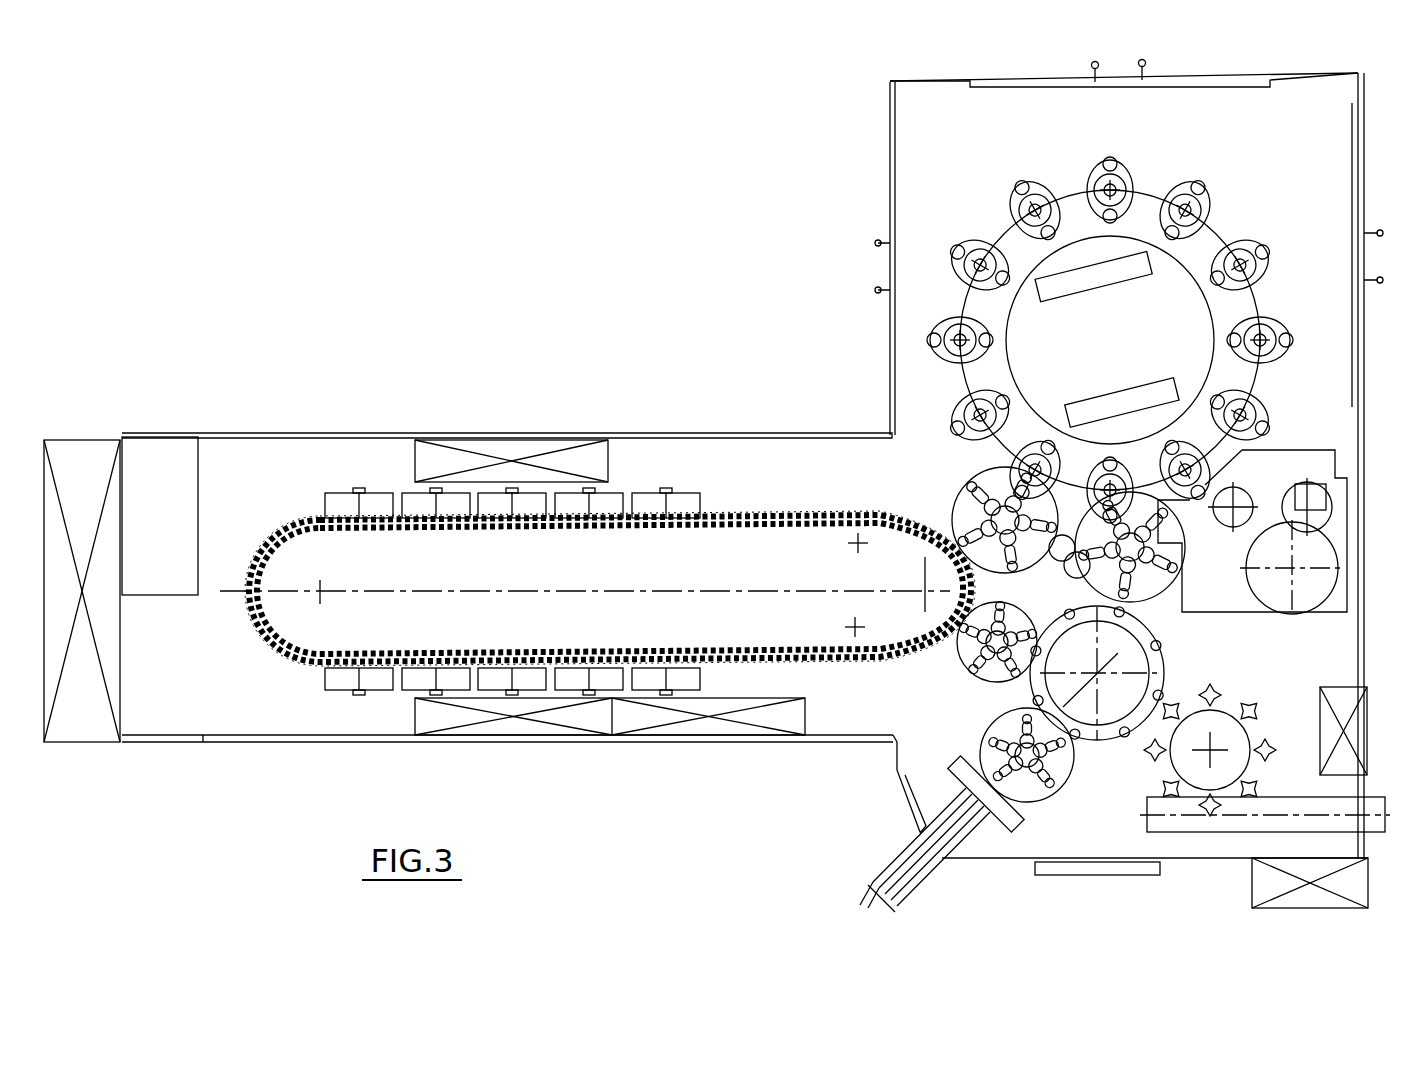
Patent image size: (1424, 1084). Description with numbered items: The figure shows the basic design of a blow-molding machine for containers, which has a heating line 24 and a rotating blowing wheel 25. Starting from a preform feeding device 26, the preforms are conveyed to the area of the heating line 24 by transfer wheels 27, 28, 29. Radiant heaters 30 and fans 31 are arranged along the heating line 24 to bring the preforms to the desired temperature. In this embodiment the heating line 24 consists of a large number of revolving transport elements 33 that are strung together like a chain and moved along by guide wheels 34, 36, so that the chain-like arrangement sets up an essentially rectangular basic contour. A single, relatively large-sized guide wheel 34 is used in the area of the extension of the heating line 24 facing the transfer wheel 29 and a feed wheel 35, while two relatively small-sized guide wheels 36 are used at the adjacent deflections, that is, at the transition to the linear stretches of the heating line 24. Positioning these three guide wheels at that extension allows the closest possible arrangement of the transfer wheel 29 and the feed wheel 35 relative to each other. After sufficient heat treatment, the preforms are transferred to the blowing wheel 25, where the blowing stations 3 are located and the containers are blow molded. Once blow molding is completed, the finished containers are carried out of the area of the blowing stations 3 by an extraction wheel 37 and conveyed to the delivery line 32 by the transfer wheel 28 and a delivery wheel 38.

The blowing station 3 is at (945, 323).
The heating line 24 is at (655, 470).
The blowing wheel 25 is at (1037, 265).
The preform feeding device 26 is at (937, 870).
The transfer wheel 27 is at (1040, 800).
The transfer wheel 28 is at (1095, 740).
The transfer wheel 29 is at (970, 670).
The radiant heater 30 is at (378, 493).
The fan 31 is at (508, 440).
The delivery line 32 is at (1375, 820).
The transport element 33 is at (292, 660).
The guide wheel 34 is at (323, 597).
The feed wheel 35 is at (980, 478).
The guide wheel 36 is at (856, 542).
The extraction wheel 37 is at (1150, 560).
The delivery wheel 38 is at (1218, 762).